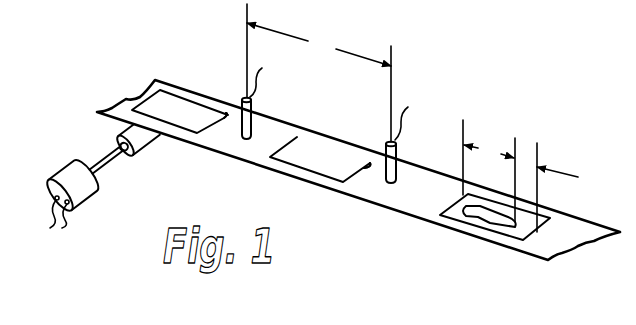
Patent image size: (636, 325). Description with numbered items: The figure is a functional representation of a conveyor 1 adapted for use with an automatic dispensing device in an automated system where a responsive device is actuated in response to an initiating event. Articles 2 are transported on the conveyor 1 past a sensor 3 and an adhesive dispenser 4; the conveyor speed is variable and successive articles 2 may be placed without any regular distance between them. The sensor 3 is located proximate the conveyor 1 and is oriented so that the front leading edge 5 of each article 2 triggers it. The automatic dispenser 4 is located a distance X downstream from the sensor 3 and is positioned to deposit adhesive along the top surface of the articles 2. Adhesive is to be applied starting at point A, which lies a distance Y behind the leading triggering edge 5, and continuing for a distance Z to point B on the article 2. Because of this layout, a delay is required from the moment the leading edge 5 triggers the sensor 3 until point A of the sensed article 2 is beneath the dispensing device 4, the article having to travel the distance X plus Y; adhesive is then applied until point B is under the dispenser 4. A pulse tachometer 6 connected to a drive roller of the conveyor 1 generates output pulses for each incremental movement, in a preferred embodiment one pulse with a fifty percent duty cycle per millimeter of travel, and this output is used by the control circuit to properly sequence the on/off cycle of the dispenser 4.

The conveyor 1 is at (407, 208).
The articles 2 is at (287, 156).
The sensor 3 is at (251, 108).
The adhesive dispenser 4 is at (397, 150).
The leading edge 5 is at (226, 108).
The pulse tachometer 6 is at (70, 178).
The distance X is at (319, 73).
The distance Y is at (525, 158).
The distance Z is at (489, 152).
The point A is at (515, 168).
The point B is at (465, 144).